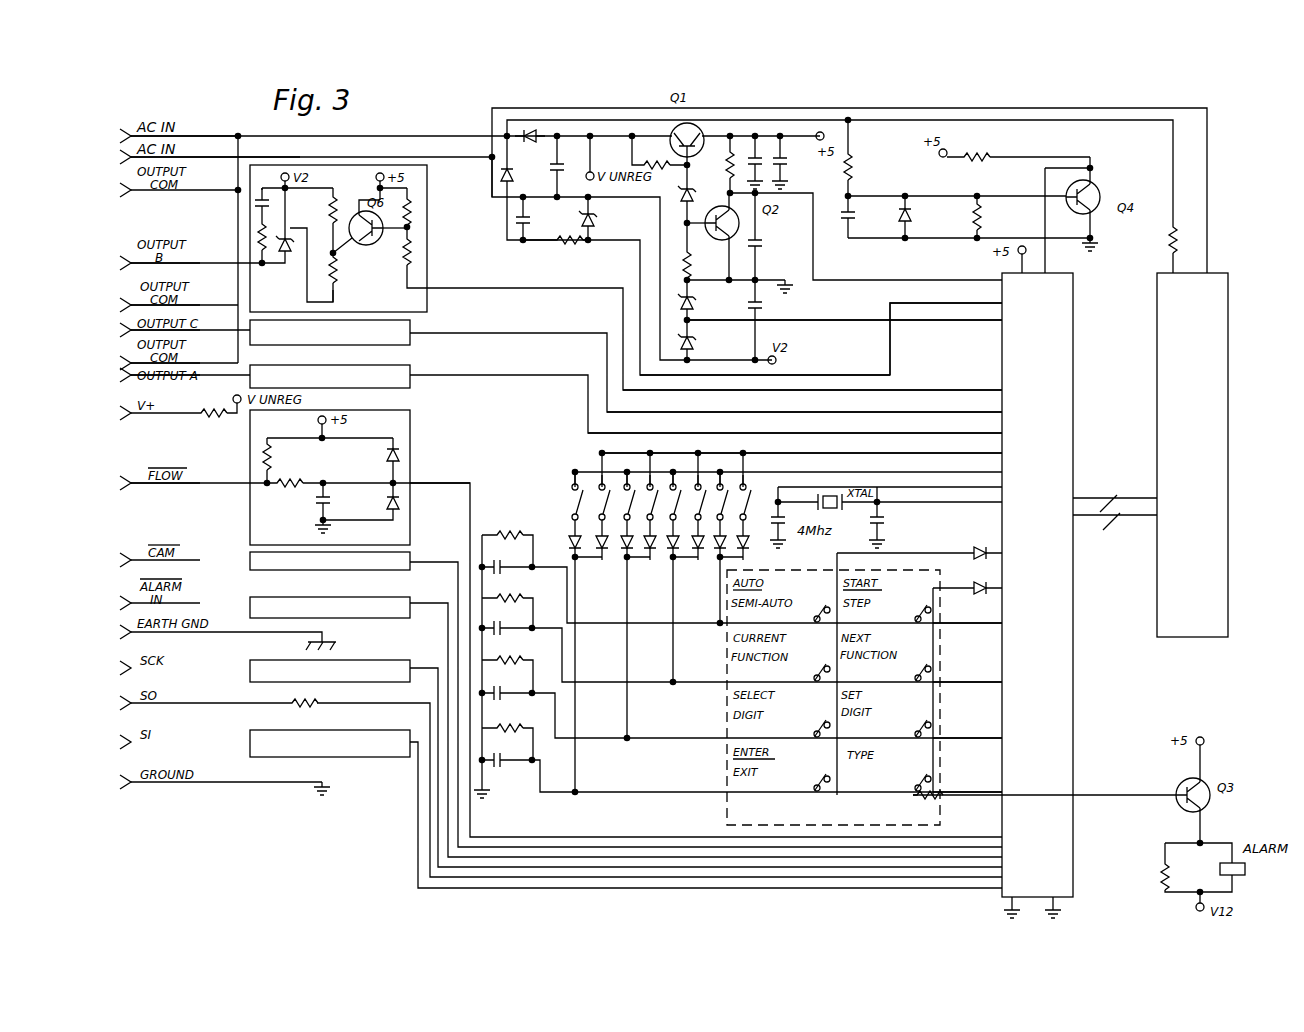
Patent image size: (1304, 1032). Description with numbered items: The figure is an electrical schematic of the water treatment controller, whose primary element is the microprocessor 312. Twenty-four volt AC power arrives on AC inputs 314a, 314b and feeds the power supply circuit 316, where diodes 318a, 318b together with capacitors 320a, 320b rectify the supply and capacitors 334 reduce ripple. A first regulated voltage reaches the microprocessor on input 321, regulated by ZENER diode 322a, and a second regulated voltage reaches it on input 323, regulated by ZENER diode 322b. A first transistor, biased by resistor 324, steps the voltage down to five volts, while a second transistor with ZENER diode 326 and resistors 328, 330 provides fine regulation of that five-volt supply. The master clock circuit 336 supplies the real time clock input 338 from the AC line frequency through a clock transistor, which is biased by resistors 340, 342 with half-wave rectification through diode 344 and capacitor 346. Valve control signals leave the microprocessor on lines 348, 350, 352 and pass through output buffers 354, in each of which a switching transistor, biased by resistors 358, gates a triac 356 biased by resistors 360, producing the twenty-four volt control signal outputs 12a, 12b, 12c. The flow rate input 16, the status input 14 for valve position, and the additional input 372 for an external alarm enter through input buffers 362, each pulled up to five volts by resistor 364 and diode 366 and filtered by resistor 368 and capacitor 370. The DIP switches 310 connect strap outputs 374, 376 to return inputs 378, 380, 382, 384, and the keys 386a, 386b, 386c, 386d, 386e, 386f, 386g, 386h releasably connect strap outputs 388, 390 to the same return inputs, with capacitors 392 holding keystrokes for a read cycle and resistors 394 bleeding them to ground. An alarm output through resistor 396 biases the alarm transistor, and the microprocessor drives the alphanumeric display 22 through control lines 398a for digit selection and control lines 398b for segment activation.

The AC power input 314a is at (125, 131).
The AC power input 314b is at (125, 153).
The control signal output 12a is at (127, 373).
The control signal output 12b is at (128, 262).
The control signal output 12c is at (127, 325).
The flow rate input 16 is at (128, 480).
The status input 14 is at (130, 560).
The additional input 372 is at (130, 610).
The power supply circuit 316 is at (704, 88).
The diode 318a is at (500, 160).
The diode 318b is at (530, 128).
The capacitor 320a is at (517, 222).
The capacitor 320b is at (563, 148).
The ZENER diode 322a is at (620, 222).
The ZENER diode 322b is at (695, 335).
The resistor 324 is at (652, 160).
The ZENER diode 326 is at (697, 185).
The resistor 328 is at (735, 150).
The resistor 330 is at (692, 258).
The capacitors 334 is at (780, 165).
The master clock circuit 336 is at (985, 178).
The real time clock input 338 is at (1060, 275).
The resistor 340 is at (851, 165).
The resistor 342 is at (982, 218).
The diode 344 is at (910, 218).
The capacitor 346 is at (851, 235).
The valve control output line 348 is at (970, 385).
The valve control output line 350 is at (957, 412).
The valve control output line 352 is at (930, 432).
The output buffer 354 is at (427, 305).
The triac 356 is at (292, 262).
The resistor 358 is at (411, 205).
The resistor 360 is at (340, 200).
The input buffer 362 is at (412, 465).
The resistor 364 is at (271, 455).
The diode 366 is at (380, 460).
The resistor 368 is at (288, 488).
The capacitor 370 is at (312, 510).
The strap output 374 is at (908, 452).
The strap output 376 is at (888, 472).
The return input 378 is at (988, 791).
The return input 380 is at (988, 737).
The return input 382 is at (988, 680).
The return input 384 is at (988, 622).
The key 386a is at (815, 605).
The key 386b is at (912, 618).
The key 386c is at (810, 675).
The key 386d is at (912, 676).
The key 386e is at (810, 732).
The key 386f is at (912, 732).
The key 386g is at (810, 788).
The key 386h is at (912, 786).
The strap output 388 is at (988, 552).
The strap output 390 is at (988, 587).
The capacitor 392 is at (525, 560).
The resistor 394 is at (503, 532).
The resistor 396 is at (1110, 800).
The control lines 398a is at (1112, 492).
The control lines 398b is at (1115, 530).
The DIP switches 310 is at (548, 450).
The microprocessor 312 is at (1002, 897).
The input 321 is at (950, 303).
The input 323 is at (945, 322).
The alphanumeric display 22 is at (1157, 640).